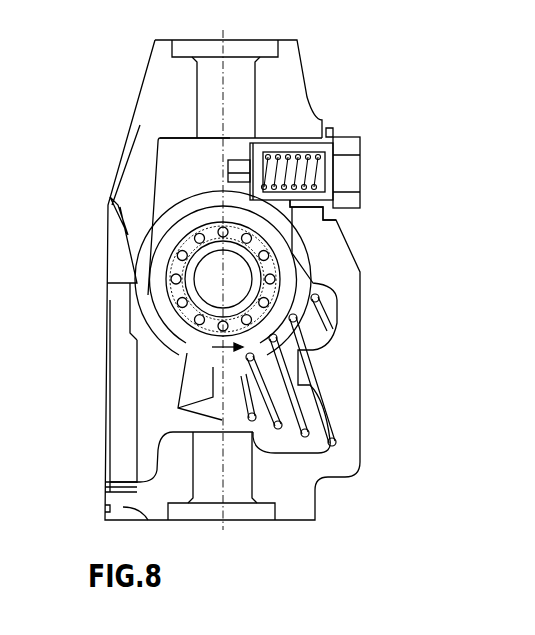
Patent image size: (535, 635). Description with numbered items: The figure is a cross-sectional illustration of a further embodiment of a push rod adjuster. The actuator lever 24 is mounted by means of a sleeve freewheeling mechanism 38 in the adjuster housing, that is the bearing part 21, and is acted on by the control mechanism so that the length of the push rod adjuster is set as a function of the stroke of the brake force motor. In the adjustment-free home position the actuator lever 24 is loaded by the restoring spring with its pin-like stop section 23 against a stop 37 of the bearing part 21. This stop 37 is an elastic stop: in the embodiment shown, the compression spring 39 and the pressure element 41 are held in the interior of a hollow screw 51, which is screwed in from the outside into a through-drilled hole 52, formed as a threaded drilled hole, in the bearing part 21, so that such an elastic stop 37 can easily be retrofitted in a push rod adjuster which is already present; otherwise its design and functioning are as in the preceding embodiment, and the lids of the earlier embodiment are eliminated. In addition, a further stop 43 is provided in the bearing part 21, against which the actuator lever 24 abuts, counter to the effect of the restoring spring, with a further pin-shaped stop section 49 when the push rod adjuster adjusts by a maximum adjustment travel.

The bearing part 21 is at (305, 503).
The pin-like stop section 23 is at (207, 193).
The actuator lever 24 is at (157, 300).
The stop 37 is at (225, 176).
The sleeve freewheeling mechanism 38 is at (173, 253).
The compression spring 39 is at (293, 140).
The pressure element 41 is at (252, 172).
The further stop 43 is at (302, 368).
The further pin-shaped stop section 49 is at (233, 388).
The hollow screw 51 is at (332, 130).
The through-drilled hole 52 is at (340, 224).